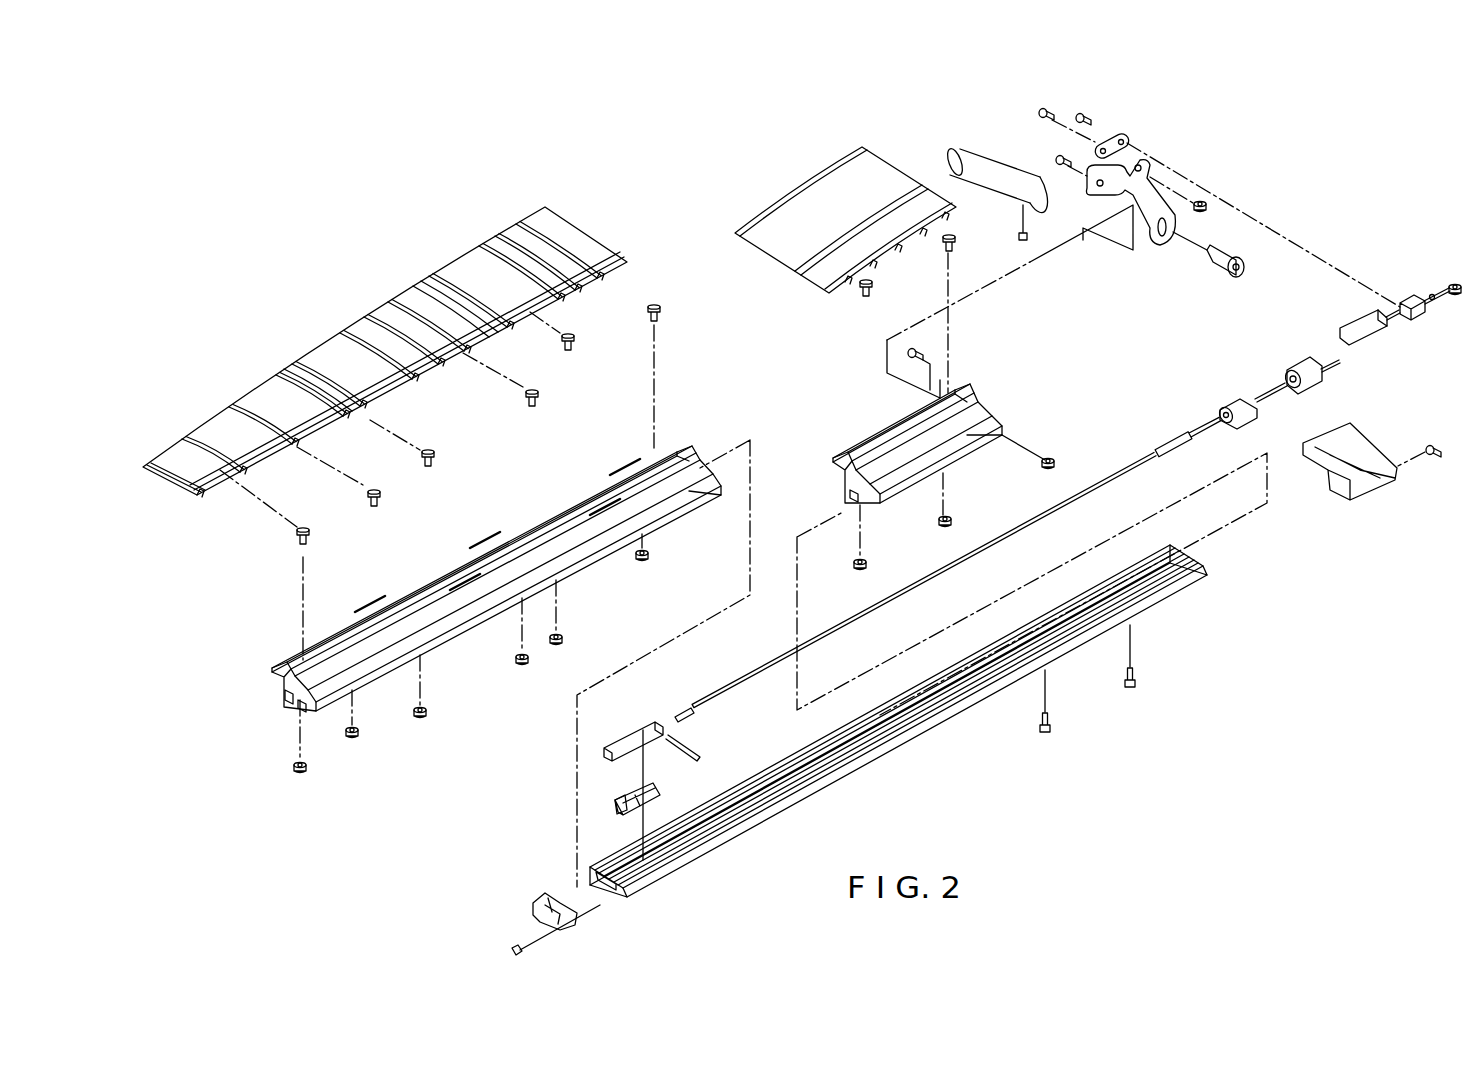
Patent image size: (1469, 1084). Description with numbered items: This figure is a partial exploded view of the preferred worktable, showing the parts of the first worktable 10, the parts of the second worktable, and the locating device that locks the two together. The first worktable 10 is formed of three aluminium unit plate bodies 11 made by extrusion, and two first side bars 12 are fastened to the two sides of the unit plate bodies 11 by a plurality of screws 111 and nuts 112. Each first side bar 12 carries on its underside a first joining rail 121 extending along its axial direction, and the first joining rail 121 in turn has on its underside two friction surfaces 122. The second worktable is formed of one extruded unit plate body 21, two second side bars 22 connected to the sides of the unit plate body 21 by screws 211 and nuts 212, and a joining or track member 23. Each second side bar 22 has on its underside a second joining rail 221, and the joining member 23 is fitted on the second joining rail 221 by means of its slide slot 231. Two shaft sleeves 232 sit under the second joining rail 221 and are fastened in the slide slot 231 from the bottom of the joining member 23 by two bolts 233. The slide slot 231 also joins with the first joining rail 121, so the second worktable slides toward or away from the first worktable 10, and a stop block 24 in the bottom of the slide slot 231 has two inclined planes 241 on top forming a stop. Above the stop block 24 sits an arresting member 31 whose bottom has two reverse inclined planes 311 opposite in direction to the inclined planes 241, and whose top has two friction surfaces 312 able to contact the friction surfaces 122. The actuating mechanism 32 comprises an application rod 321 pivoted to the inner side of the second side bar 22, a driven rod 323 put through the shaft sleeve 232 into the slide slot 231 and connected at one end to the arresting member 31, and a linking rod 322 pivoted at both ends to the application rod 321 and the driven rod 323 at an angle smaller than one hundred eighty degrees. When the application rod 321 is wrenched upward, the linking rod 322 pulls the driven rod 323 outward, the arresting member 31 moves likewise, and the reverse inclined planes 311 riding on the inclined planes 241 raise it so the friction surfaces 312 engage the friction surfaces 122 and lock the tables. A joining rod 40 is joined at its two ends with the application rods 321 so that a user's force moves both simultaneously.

The first worktable 10 is at (718, 292).
The unit plate bodies 11 is at (424, 354).
The screws 111 is at (580, 352).
The nuts 112 is at (293, 772).
The first side bars 12 is at (672, 452).
The first joining rail 121 is at (318, 703).
The friction surfaces 122 is at (320, 700).
The unit plate body 21 is at (787, 240).
The screws 211 is at (864, 300).
The nuts 212 is at (857, 562).
The second side bars 22 is at (1000, 412).
The second joining rail 221 is at (873, 500).
The joining member 23 is at (1180, 595).
The slide slot 231 is at (605, 880).
The shaft sleeves 232 is at (1300, 353).
The bolts 233 is at (1053, 727).
The stop block 24 is at (657, 786).
The inclined planes 241 is at (617, 800).
The arresting member 31 is at (662, 728).
The reverse inclined planes 311 is at (622, 762).
The friction surfaces 312 is at (640, 728).
The actuating mechanism 32 is at (1055, 265).
The application rod 321 is at (1137, 215).
The linking rod 322 is at (1087, 162).
The driven rod 323 is at (1123, 470).
The joining rod 40 is at (978, 157).